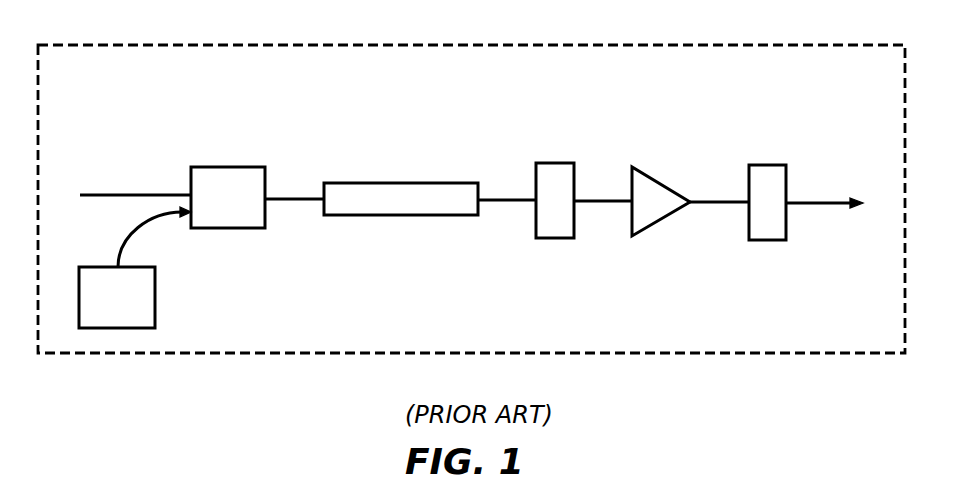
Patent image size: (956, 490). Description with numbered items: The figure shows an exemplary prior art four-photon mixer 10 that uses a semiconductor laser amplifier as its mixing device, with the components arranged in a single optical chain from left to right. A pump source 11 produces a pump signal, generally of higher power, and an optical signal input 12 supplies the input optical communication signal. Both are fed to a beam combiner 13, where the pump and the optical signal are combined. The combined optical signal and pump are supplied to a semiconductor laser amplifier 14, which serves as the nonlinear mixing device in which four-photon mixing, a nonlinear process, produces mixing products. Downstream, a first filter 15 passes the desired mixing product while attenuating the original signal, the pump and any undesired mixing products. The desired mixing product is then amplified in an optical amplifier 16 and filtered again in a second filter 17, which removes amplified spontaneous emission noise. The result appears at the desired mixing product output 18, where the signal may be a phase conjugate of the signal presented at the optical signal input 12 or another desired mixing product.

The four-photon mixer 10 is at (458, 51).
The pump source 11 is at (156, 300).
The optical signal input 12 is at (139, 193).
The beam combiner 13 is at (236, 166).
The semiconductor laser amplifier 14 is at (410, 183).
The first filter 15 is at (562, 163).
The optical amplifier 16 is at (664, 183).
The second filter 17 is at (768, 165).
The desired mixing product output 18 is at (823, 201).